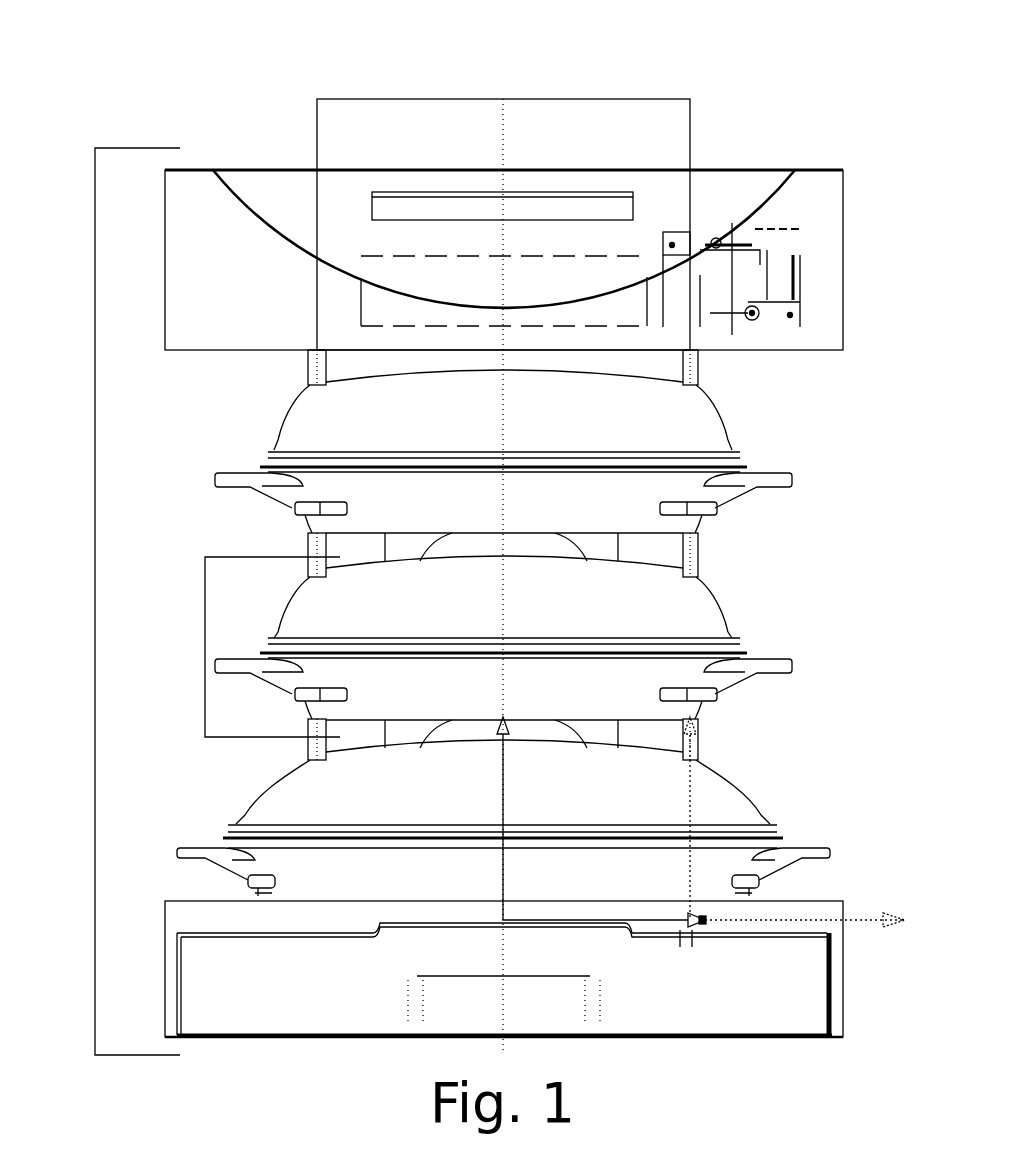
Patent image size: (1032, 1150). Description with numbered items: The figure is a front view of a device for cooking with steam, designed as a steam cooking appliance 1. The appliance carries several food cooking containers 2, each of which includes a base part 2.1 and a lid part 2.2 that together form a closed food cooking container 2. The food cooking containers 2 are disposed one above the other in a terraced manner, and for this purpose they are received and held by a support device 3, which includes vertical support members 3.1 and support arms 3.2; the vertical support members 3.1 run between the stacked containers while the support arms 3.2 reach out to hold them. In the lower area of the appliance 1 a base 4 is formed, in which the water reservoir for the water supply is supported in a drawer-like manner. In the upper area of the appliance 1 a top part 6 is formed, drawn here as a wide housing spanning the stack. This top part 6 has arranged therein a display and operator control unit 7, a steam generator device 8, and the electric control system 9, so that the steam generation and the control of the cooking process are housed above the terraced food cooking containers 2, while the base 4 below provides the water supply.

The steam cooking appliance 1 is at (95, 603).
The food cooking container 2 is at (205, 647).
The base part 2.1 is at (513, 704).
The lid part 2.2 is at (537, 617).
The support device 3 is at (503, 99).
The vertical support member 3.1 is at (705, 553).
The support arm 3.2 is at (690, 695).
The base 4 is at (827, 917).
The top part 6 is at (830, 188).
The display and operator control unit 7 is at (580, 205).
The steam generator device 8 is at (797, 300).
The electric control system 9 is at (405, 268).